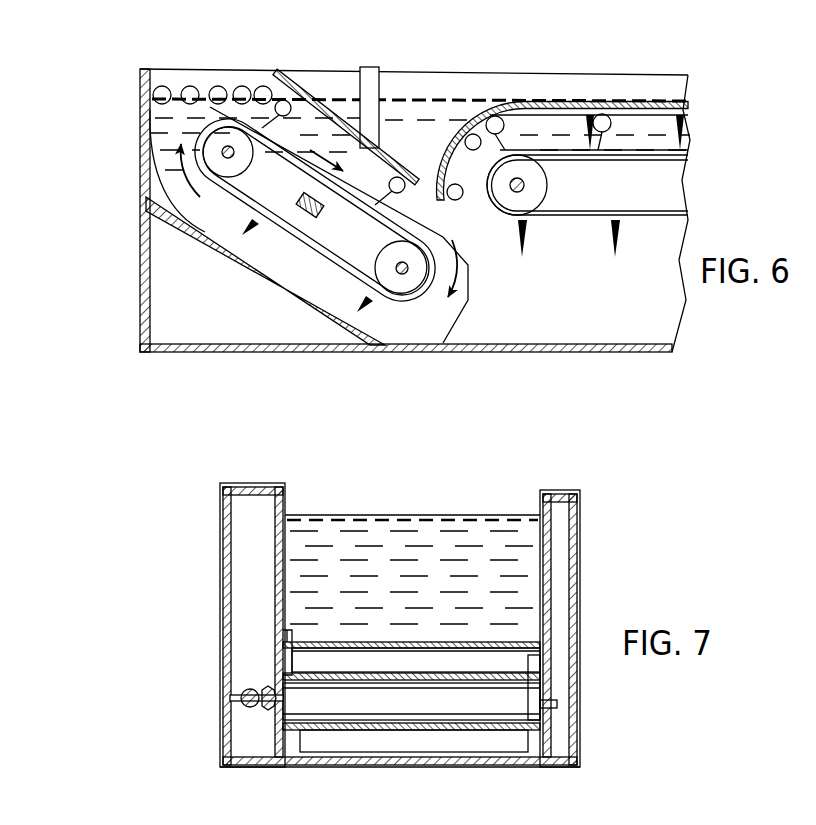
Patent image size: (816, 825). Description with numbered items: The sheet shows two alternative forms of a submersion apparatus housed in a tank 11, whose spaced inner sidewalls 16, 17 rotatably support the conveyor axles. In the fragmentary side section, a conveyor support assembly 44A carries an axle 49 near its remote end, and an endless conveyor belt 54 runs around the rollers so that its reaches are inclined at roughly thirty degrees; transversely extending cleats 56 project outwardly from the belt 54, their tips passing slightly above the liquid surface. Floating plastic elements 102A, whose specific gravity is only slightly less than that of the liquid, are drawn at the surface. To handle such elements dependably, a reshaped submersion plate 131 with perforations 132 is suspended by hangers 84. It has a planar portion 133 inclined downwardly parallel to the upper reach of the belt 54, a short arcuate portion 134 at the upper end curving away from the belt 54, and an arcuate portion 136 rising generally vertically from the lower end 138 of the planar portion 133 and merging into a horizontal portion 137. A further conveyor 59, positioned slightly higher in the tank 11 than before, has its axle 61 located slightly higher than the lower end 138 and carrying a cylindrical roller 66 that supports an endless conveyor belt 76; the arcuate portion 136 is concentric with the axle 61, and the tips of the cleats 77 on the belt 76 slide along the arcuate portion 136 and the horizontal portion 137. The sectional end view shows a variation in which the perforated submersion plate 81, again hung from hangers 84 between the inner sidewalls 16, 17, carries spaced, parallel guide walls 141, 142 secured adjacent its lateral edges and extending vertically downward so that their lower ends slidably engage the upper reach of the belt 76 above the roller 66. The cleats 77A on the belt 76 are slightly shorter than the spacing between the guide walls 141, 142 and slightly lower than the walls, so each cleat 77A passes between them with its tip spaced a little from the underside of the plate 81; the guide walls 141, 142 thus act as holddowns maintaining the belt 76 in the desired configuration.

In FIG. 6, the tank 11 is at (124, 137).
In FIG. 7, the inner sidewall 16 is at (275, 582).
In FIG. 7, the inner sidewall 17 is at (551, 582).
In FIG. 6, the conveyor support assembly 44A is at (309, 250).
In FIG. 6, the axle 49 is at (403, 276).
In FIG. 6, the endless conveyor belt 54 is at (290, 231).
In FIG. 6, the cleats 56 is at (247, 229).
In FIG. 6, the conveyor 59 is at (608, 236).
In FIG. 6, the axle 61 is at (523, 196).
In FIG. 6, the cylindrical roller 66 is at (510, 208).
In FIG. 7, the cylindrical roller 66 is at (326, 705).
In FIG. 6, the endless conveyor belt 76 is at (684, 219).
In FIG. 7, the endless conveyor belt 76 is at (485, 727).
In FIG. 6, the cleats 77 is at (618, 232).
In FIG. 7, the cleats 77A is at (548, 675).
In FIG. 7, the submersion plate 81 is at (338, 643).
In FIG. 6, the hangers 84 is at (386, 87).
In FIG. 7, the hangers 84 is at (290, 494).
In FIG. 6, the plastic elements 102A is at (247, 92).
In FIG. 6, the submersion plate 131 is at (406, 148).
In FIG. 6, the perforations 132 is at (540, 102).
In FIG. 6, the planar portion 133 is at (325, 89).
In FIG. 6, the arcuate portion 134 is at (285, 90).
In FIG. 6, the arcuate portion 136 is at (458, 120).
In FIG. 6, the horizontal portion 137 is at (606, 107).
In FIG. 6, the lower end 138 is at (447, 190).
In FIG. 7, the guide wall 141 is at (283, 660).
In FIG. 7, the guide wall 142 is at (552, 681).